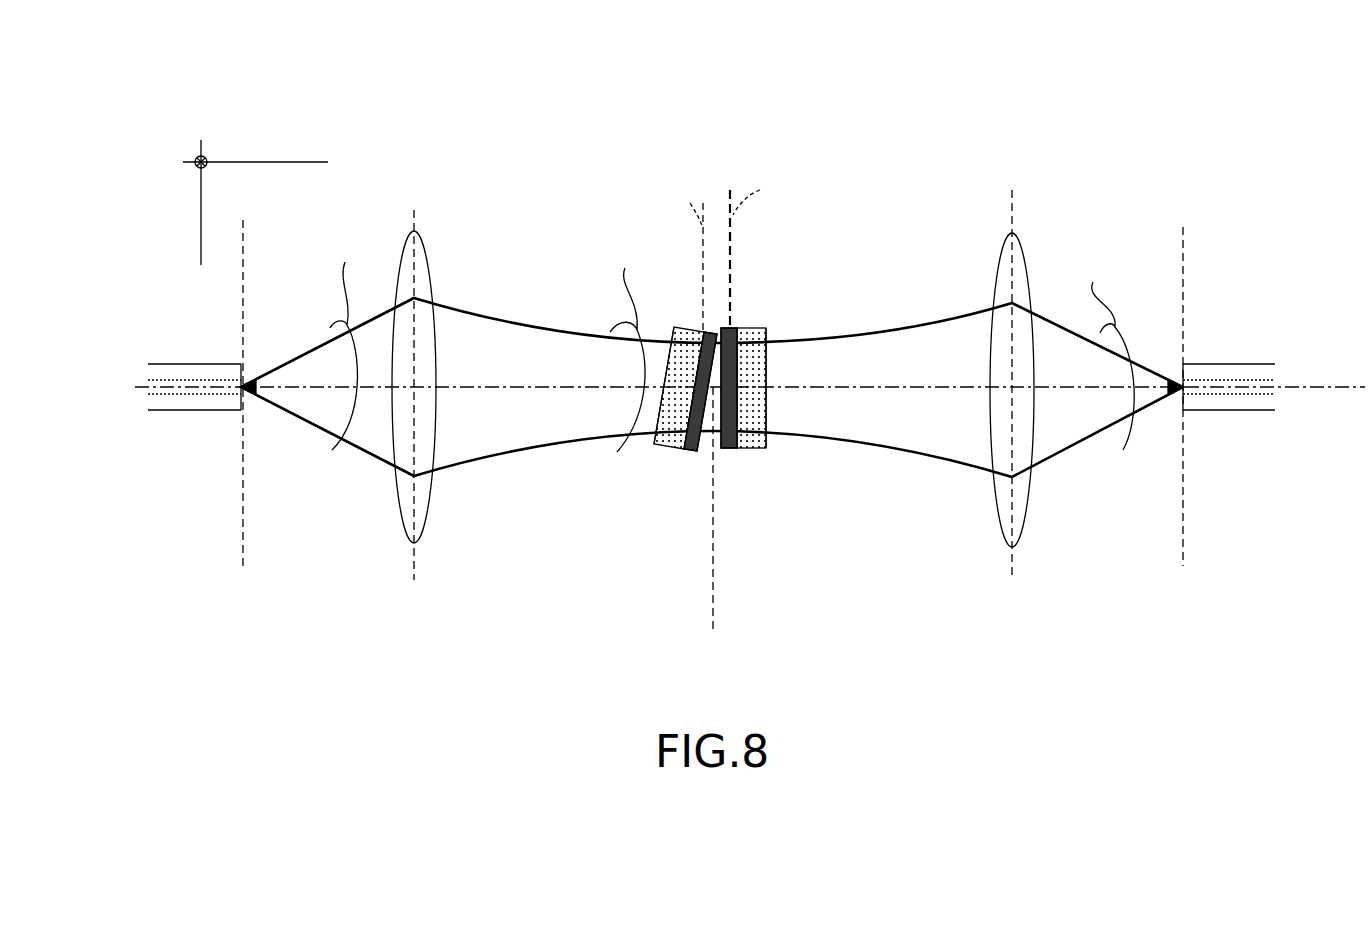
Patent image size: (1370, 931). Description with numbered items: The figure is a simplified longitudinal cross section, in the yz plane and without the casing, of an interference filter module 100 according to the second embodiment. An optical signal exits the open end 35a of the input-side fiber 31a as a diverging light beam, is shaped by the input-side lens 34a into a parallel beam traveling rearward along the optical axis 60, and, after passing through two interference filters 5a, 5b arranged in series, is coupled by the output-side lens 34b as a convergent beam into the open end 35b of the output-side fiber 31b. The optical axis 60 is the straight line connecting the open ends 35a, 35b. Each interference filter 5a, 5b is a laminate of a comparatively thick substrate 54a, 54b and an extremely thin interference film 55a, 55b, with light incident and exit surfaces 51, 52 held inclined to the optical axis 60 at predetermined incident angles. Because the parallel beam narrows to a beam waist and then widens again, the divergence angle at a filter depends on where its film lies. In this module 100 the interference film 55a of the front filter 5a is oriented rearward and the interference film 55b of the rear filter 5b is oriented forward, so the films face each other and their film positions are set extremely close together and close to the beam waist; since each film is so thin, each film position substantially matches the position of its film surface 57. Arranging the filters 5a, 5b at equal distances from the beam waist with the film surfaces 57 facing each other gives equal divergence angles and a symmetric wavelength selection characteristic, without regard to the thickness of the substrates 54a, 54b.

The interference filter module 100 is at (862, 206).
The input-side fiber 31a is at (180, 403).
The output-side fiber 31b is at (1224, 376).
The input-side lens 34a is at (404, 521).
The output-side lens 34b is at (1030, 282).
The open end 35a is at (263, 372).
The open end 35b is at (1163, 380).
The optical axis 60 is at (527, 385).
The light incident surface 51 is at (668, 336).
The light exit surface 52 is at (769, 357).
The film surface 57 is at (737, 448).
The interference filter 5a is at (668, 518).
The substrate 54a is at (670, 448).
The interference film 55a is at (696, 453).
The interference filter 5b is at (840, 486).
The substrate 54b is at (763, 448).
The interference film 55b is at (740, 456).